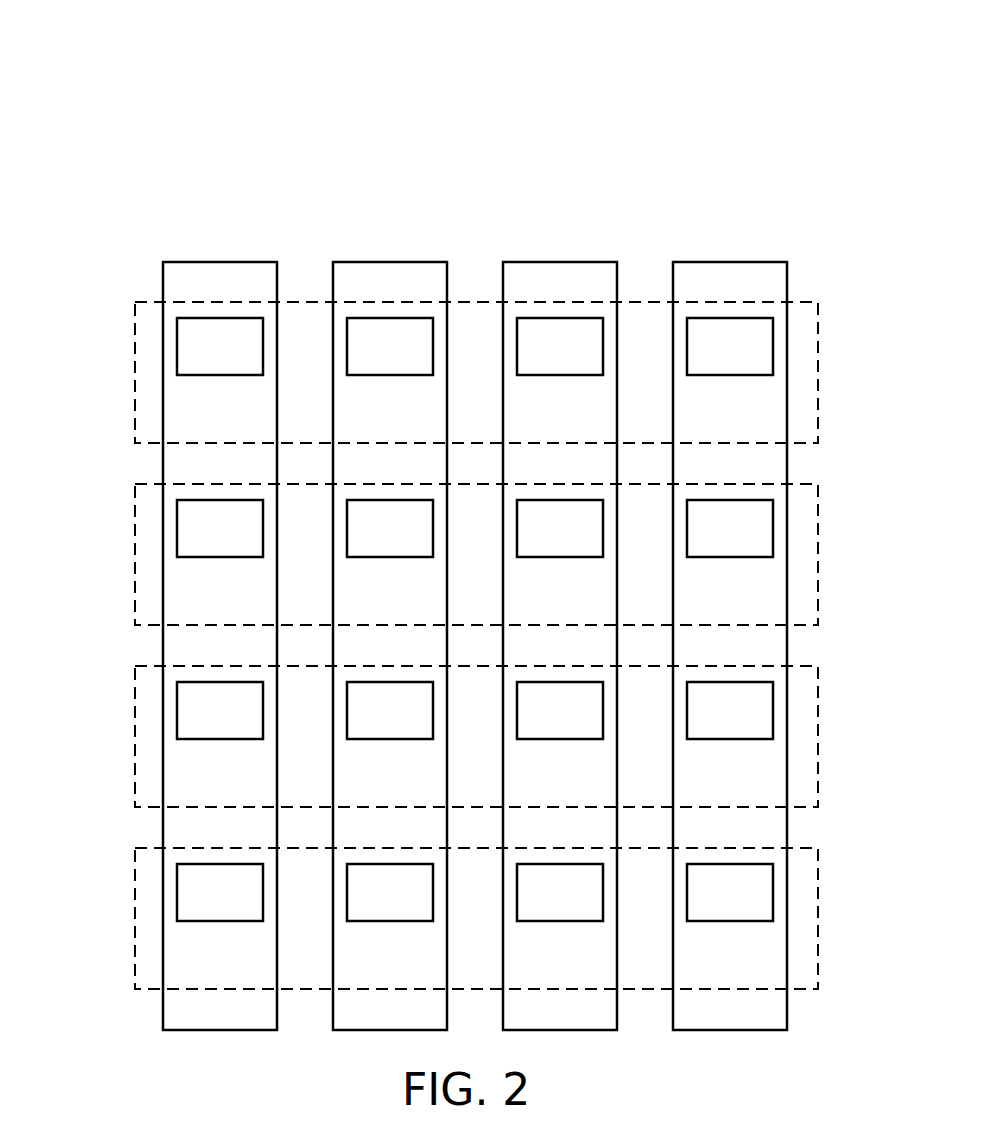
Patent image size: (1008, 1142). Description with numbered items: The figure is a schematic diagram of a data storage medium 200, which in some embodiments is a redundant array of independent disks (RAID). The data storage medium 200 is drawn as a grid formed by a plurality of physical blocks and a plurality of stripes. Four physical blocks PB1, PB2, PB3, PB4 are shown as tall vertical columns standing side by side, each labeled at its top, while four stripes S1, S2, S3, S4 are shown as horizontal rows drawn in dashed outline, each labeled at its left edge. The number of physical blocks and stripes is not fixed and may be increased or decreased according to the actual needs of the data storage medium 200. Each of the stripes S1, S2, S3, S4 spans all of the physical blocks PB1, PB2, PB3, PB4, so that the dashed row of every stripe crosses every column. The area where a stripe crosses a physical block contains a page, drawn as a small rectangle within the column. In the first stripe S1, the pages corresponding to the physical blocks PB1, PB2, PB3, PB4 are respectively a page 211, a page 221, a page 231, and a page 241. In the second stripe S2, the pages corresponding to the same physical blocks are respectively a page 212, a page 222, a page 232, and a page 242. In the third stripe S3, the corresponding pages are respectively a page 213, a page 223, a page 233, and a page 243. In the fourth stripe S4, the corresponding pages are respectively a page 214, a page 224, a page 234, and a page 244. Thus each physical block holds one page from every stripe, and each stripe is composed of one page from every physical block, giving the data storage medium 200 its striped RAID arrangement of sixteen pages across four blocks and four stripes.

The data storage medium 200 is at (792, 74).
The physical block PB1 is at (207, 262).
The physical block PB2 is at (377, 262).
The physical block PB3 is at (547, 262).
The physical block PB4 is at (717, 262).
The stripe S1 is at (135, 370).
The stripe S2 is at (135, 552).
The stripe S3 is at (135, 734).
The stripe S4 is at (135, 916).
The page 211 is at (250, 377).
The page 212 is at (250, 559).
The page 213 is at (250, 741).
The page 214 is at (250, 923).
The page 221 is at (420, 377).
The page 222 is at (420, 559).
The page 223 is at (420, 741).
The page 224 is at (420, 923).
The page 231 is at (590, 377).
The page 232 is at (590, 559).
The page 233 is at (590, 741).
The page 234 is at (590, 923).
The page 241 is at (760, 377).
The page 242 is at (760, 559).
The page 243 is at (760, 741).
The page 244 is at (760, 923).